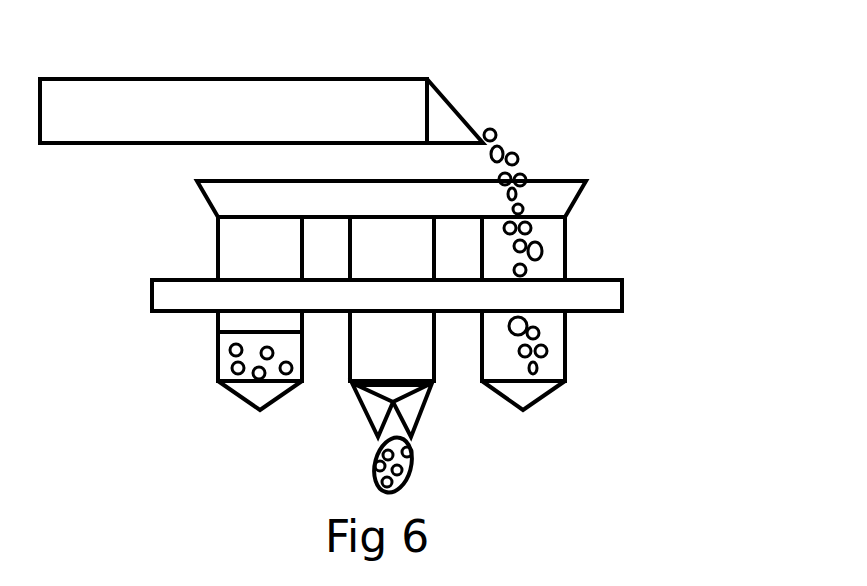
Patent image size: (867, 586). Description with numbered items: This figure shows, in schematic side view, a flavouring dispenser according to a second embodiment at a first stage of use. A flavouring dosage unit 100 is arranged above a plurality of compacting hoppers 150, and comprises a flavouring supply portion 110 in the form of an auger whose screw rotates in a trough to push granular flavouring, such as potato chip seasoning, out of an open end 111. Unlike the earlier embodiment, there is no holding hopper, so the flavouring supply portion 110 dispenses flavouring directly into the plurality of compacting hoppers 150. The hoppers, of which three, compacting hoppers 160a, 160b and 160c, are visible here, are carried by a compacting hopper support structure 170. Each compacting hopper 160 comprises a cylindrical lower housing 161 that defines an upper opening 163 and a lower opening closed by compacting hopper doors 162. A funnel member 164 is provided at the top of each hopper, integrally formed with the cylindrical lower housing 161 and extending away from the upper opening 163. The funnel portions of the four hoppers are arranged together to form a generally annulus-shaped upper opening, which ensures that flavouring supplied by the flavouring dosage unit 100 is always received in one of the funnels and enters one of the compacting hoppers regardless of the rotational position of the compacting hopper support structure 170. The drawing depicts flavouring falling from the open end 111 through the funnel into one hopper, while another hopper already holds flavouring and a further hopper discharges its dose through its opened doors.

The flavouring dosage unit 100 is at (524, 90).
The flavouring supply portion 110 is at (320, 78).
The open end 111 is at (455, 100).
The plurality of compacting hoppers 150 is at (620, 383).
The compacting hopper 160 is at (215, 243).
The compacting hopper 160a is at (582, 360).
The compacting hopper 160b is at (440, 368).
The compacting hopper 160c is at (212, 370).
The cylindrical lower housing 161 is at (568, 327).
The compacting hopper doors 162 is at (538, 398).
The upper opening 163 is at (266, 204).
The funnel member 164 is at (592, 178).
The compacting hopper support structure 170 is at (160, 295).